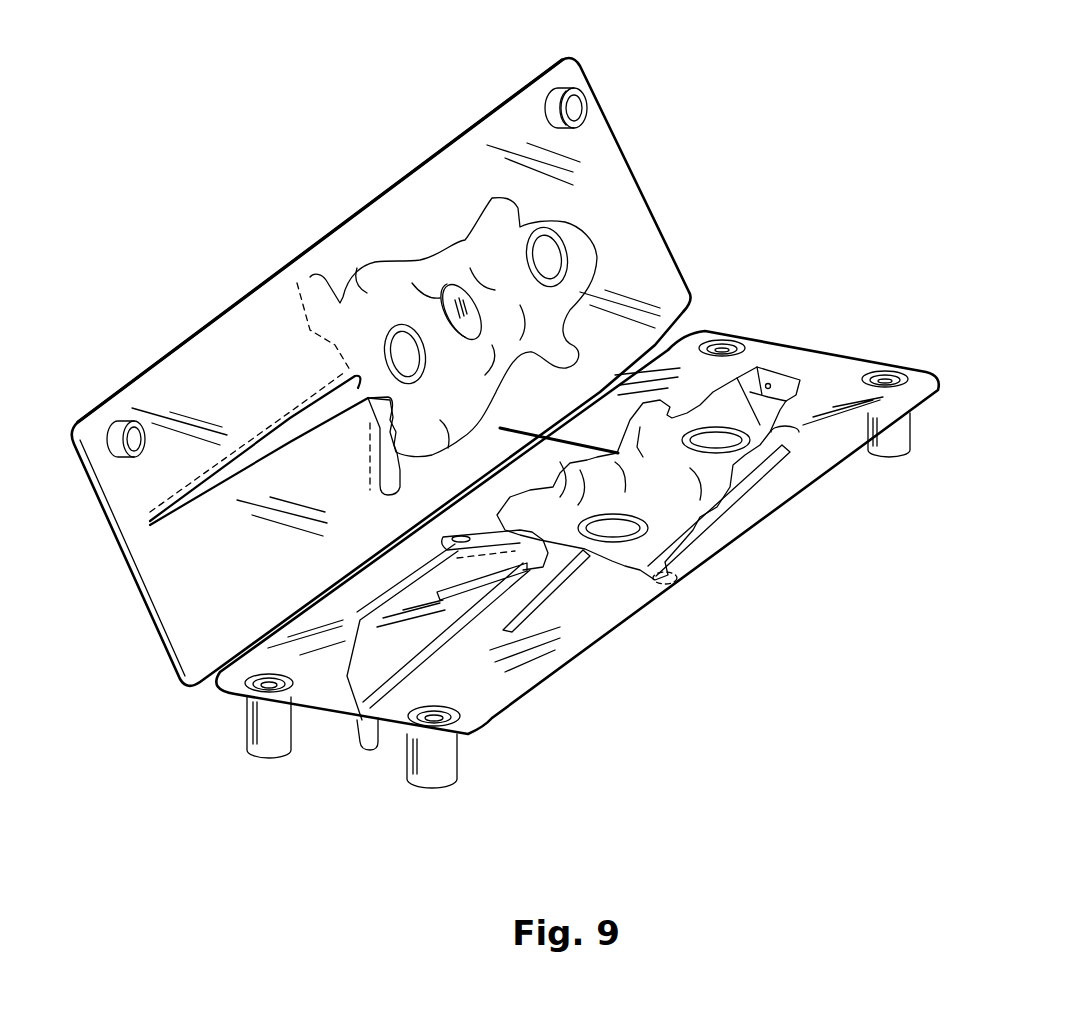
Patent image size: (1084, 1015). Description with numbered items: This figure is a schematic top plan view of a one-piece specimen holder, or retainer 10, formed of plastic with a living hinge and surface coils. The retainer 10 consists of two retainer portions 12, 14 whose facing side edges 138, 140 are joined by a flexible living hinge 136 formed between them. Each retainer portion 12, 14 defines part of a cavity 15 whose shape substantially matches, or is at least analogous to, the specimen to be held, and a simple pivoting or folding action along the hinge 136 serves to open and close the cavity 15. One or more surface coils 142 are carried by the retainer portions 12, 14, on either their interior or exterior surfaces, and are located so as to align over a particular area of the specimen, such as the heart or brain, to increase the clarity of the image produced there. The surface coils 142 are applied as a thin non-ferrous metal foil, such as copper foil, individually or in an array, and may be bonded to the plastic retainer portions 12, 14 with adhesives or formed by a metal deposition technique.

The retainer 10 is at (825, 243).
The retainer portion 12 is at (712, 645).
The retainer portion 14 is at (320, 172).
The cavity 15 is at (655, 485).
The flexible living hinge 136 is at (601, 455).
The side edge 138 is at (193, 590).
The side edge 140 is at (313, 663).
The surface coil 142 is at (650, 532).